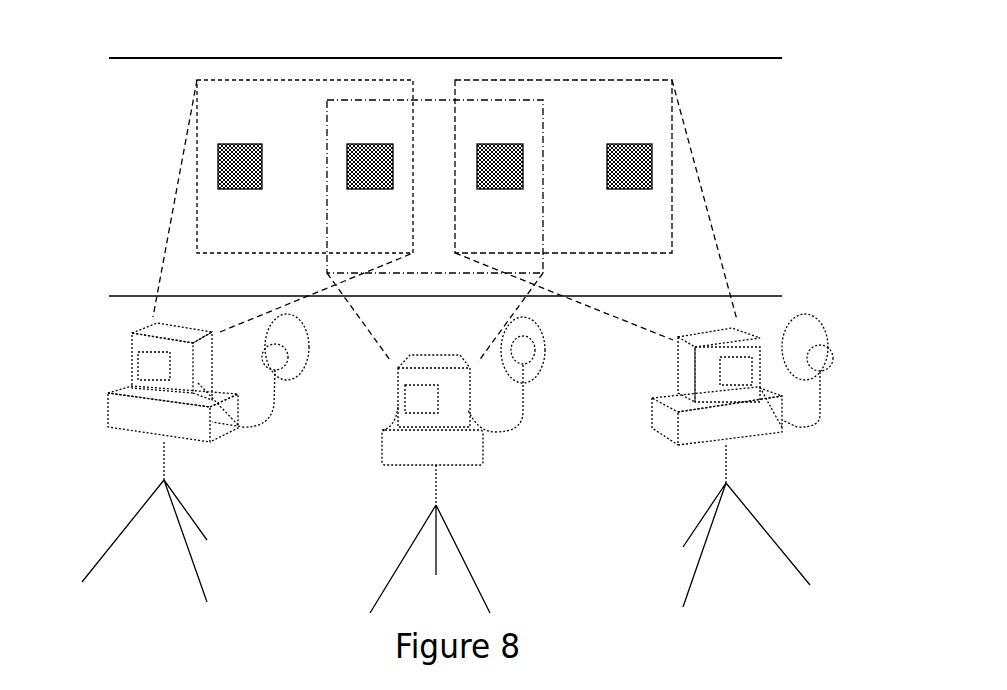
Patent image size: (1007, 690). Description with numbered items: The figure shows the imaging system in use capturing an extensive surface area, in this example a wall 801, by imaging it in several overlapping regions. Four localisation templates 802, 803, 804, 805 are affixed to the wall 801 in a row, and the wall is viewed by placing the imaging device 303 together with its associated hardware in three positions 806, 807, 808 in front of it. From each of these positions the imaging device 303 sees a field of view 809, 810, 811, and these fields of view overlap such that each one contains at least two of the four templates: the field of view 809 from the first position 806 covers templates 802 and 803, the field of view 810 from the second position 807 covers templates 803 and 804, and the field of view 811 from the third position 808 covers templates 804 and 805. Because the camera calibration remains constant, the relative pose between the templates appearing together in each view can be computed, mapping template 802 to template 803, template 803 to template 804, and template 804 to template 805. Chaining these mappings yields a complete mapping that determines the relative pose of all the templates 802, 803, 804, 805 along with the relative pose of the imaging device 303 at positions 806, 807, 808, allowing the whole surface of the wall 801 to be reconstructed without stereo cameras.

The wall 801 is at (497, 58).
The localisation template 802 is at (263, 177).
The localisation template 803 is at (347, 180).
The localisation template 804 is at (518, 188).
The localisation template 805 is at (608, 168).
The position 806 is at (165, 452).
The position 807 is at (344, 469).
The position 808 is at (630, 450).
The field of view 809 is at (172, 192).
The field of view 810 is at (388, 100).
The field of view 811 is at (698, 176).
The imaging device 303 is at (135, 340).